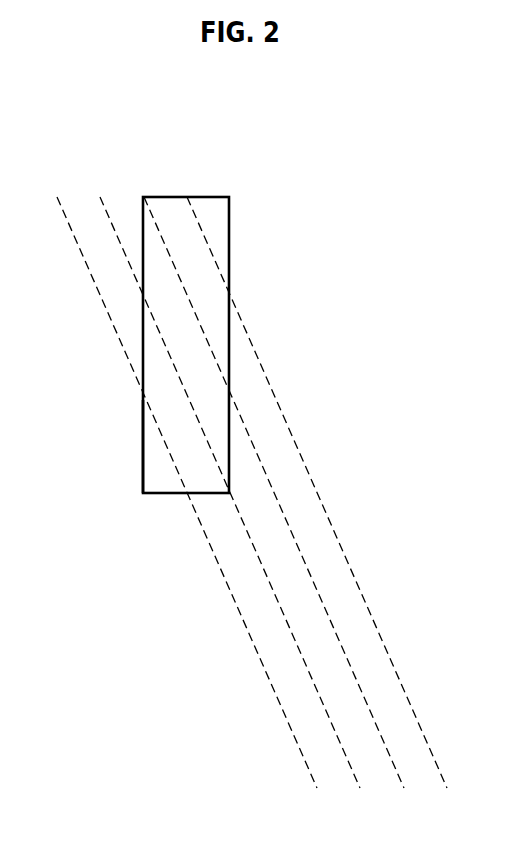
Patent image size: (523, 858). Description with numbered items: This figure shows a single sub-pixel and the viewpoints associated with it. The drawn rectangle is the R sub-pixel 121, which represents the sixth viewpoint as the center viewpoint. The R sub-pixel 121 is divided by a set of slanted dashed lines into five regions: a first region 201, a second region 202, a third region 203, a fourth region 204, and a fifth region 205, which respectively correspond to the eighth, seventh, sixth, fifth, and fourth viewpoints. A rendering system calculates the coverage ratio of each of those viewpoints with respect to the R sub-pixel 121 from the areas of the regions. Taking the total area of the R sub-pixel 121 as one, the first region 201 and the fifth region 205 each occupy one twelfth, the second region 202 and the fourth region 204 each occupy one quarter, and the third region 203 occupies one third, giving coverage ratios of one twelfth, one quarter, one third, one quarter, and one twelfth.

The R sub-pixel 121 is at (168, 197).
The first region 201 is at (218, 223).
The second region 202 is at (203, 292).
The third region 203 is at (203, 390).
The fourth region 204 is at (165, 400).
The fifth region 205 is at (157, 467).